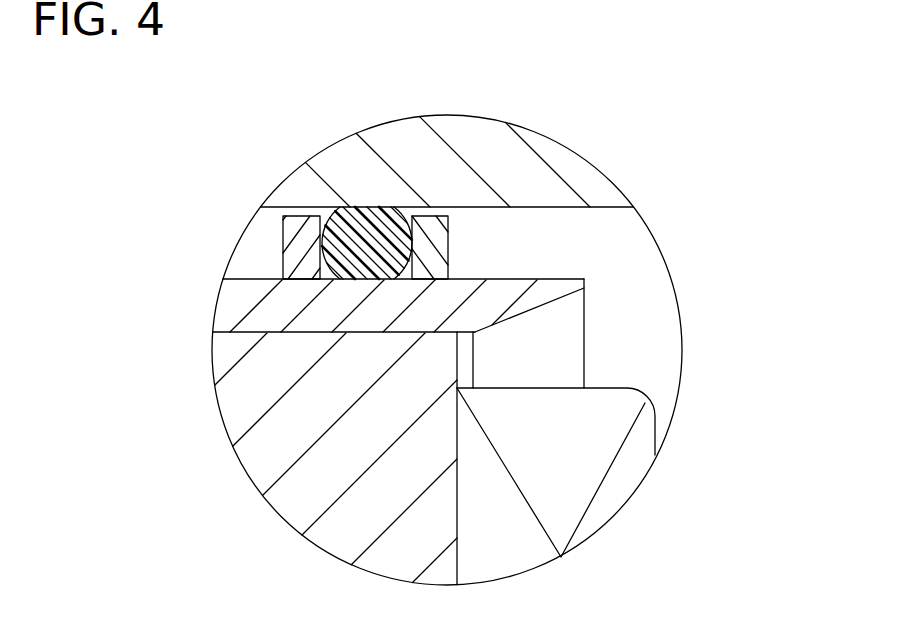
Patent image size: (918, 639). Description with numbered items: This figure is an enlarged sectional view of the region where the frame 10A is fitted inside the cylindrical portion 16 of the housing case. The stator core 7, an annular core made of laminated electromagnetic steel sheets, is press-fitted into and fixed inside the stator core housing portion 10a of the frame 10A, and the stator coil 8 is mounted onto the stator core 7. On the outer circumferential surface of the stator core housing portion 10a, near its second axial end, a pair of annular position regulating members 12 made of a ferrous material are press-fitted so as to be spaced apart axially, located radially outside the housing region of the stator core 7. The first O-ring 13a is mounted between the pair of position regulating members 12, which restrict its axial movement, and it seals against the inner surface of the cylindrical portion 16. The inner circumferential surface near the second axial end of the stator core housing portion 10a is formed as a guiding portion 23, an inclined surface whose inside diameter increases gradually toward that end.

The cylindrical portion 16 is at (377, 138).
The first O-ring 13a is at (355, 218).
The position regulating members 12 is at (298, 232).
The frame 10A is at (240, 276).
The stator core housing portion 10a is at (242, 302).
The stator core 7 is at (238, 392).
The stator coil 8 is at (630, 459).
The guiding portion 23 is at (537, 308).